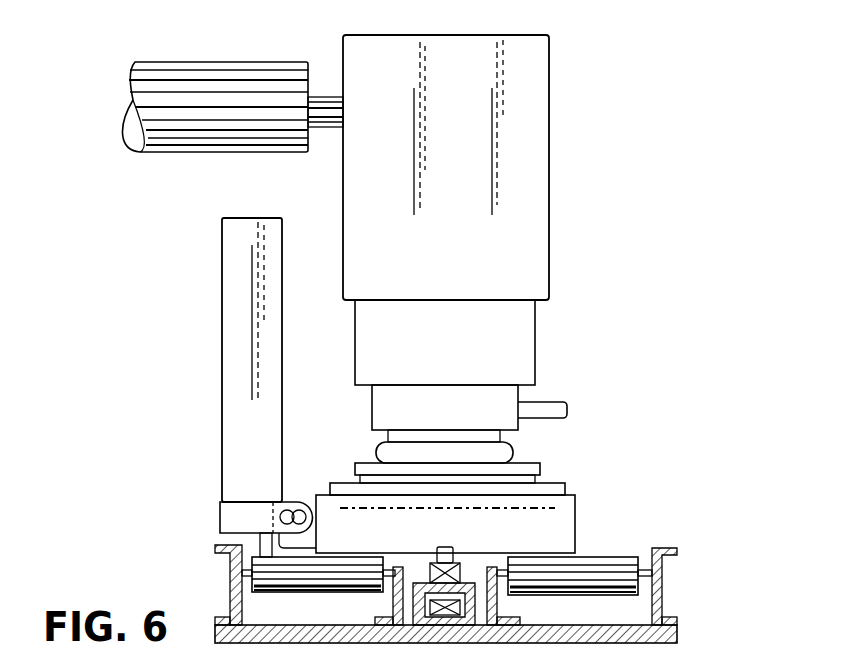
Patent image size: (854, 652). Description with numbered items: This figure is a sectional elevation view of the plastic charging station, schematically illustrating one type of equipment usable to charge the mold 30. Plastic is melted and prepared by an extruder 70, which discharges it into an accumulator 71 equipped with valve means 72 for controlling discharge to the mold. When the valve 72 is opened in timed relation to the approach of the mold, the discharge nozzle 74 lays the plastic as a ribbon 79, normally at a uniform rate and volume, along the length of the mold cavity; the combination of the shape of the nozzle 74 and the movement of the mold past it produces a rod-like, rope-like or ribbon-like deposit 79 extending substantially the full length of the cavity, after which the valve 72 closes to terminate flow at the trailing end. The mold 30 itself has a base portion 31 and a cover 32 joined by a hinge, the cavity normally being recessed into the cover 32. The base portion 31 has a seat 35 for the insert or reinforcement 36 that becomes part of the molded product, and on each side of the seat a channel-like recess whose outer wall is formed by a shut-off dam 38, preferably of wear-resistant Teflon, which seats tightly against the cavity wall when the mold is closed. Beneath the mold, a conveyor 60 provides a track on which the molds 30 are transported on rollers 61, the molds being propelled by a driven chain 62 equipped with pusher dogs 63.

The mold 30 is at (215, 512).
The base portion 31 is at (575, 523).
The cover 32 is at (222, 379).
The seat 35 is at (535, 480).
The insert or reinforcement 36 is at (540, 470).
The shut-off dam 38 is at (565, 488).
The conveyor 60 is at (670, 592).
The rollers 61 is at (335, 578).
The driven chain 62 is at (430, 565).
The pusher dogs 63 is at (472, 542).
The extruder 70 is at (161, 150).
The accumulator 71 is at (549, 182).
The valve means 72 is at (553, 401).
The discharge nozzle 74 is at (371, 404).
The ribbon 79 is at (513, 455).